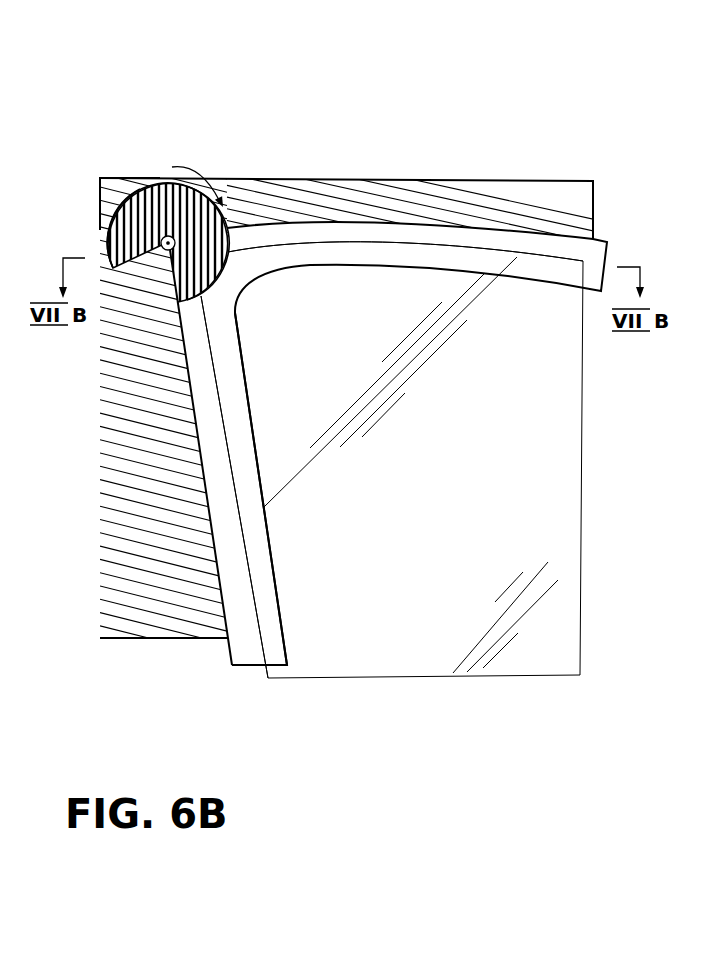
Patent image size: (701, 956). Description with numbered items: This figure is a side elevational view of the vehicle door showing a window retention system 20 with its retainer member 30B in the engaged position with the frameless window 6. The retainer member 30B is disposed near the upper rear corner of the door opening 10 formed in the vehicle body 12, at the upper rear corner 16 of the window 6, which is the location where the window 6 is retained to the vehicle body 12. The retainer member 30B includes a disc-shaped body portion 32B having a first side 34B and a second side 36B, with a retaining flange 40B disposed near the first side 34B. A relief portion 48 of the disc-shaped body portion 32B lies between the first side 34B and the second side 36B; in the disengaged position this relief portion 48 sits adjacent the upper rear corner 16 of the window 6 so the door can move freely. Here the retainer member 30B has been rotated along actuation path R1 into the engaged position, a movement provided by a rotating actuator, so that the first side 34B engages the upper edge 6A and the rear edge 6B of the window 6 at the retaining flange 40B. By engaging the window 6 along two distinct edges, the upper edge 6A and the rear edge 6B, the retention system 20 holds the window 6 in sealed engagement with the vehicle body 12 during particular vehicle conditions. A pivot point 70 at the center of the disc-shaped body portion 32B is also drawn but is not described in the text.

The frameless window 6 is at (555, 435).
The upper edge 6A is at (462, 255).
The rear edge 6B is at (236, 476).
The door opening 10 is at (262, 537).
The vehicle body 12 is at (130, 435).
The upper rear corner 16 is at (231, 278).
The window retention system 20 is at (83, 213).
The retainer member 30B is at (147, 168).
The disc-shaped body portion 32B is at (172, 197).
The first side 34B is at (209, 292).
The second side 36B is at (128, 193).
The retaining flange 40B is at (205, 288).
The relief portion 48 is at (153, 258).
The pivot axis 70 is at (165, 252).
The actuation path R1 is at (206, 170).